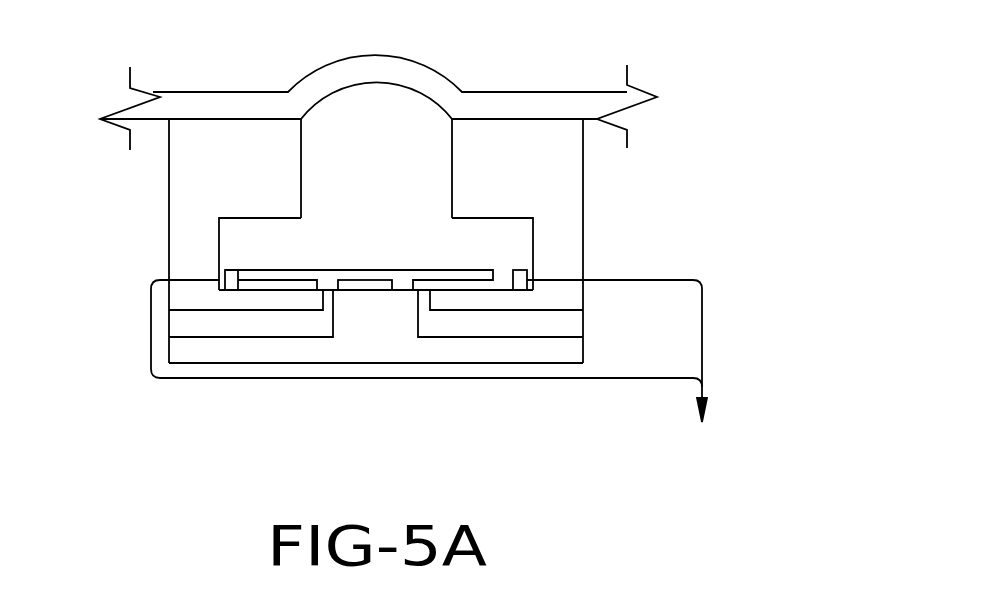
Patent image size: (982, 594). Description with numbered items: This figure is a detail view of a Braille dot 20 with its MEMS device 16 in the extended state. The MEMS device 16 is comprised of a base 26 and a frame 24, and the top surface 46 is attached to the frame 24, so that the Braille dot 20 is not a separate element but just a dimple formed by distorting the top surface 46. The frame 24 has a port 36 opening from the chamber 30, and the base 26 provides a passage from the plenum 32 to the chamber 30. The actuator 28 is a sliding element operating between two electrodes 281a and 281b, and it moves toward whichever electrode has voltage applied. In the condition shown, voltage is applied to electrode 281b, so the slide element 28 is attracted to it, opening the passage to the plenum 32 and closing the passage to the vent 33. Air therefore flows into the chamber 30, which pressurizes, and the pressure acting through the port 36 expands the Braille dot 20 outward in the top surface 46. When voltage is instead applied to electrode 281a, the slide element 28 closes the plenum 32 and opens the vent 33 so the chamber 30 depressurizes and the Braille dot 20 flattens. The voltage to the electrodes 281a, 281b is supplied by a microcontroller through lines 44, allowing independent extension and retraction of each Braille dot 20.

The MEMS device 16 is at (158, 368).
The Braille dot 20 is at (433, 68).
The frame 24 is at (168, 176).
The base 26 is at (168, 352).
The actuator 28 is at (493, 270).
The electrode 281a is at (522, 270).
The electrode 281b is at (228, 271).
The chamber 30 is at (478, 215).
The plenum 32 is at (540, 337).
The vent 33 is at (255, 337).
The port 36 is at (452, 165).
The lines 44 is at (702, 390).
The top surface 46 is at (220, 92).